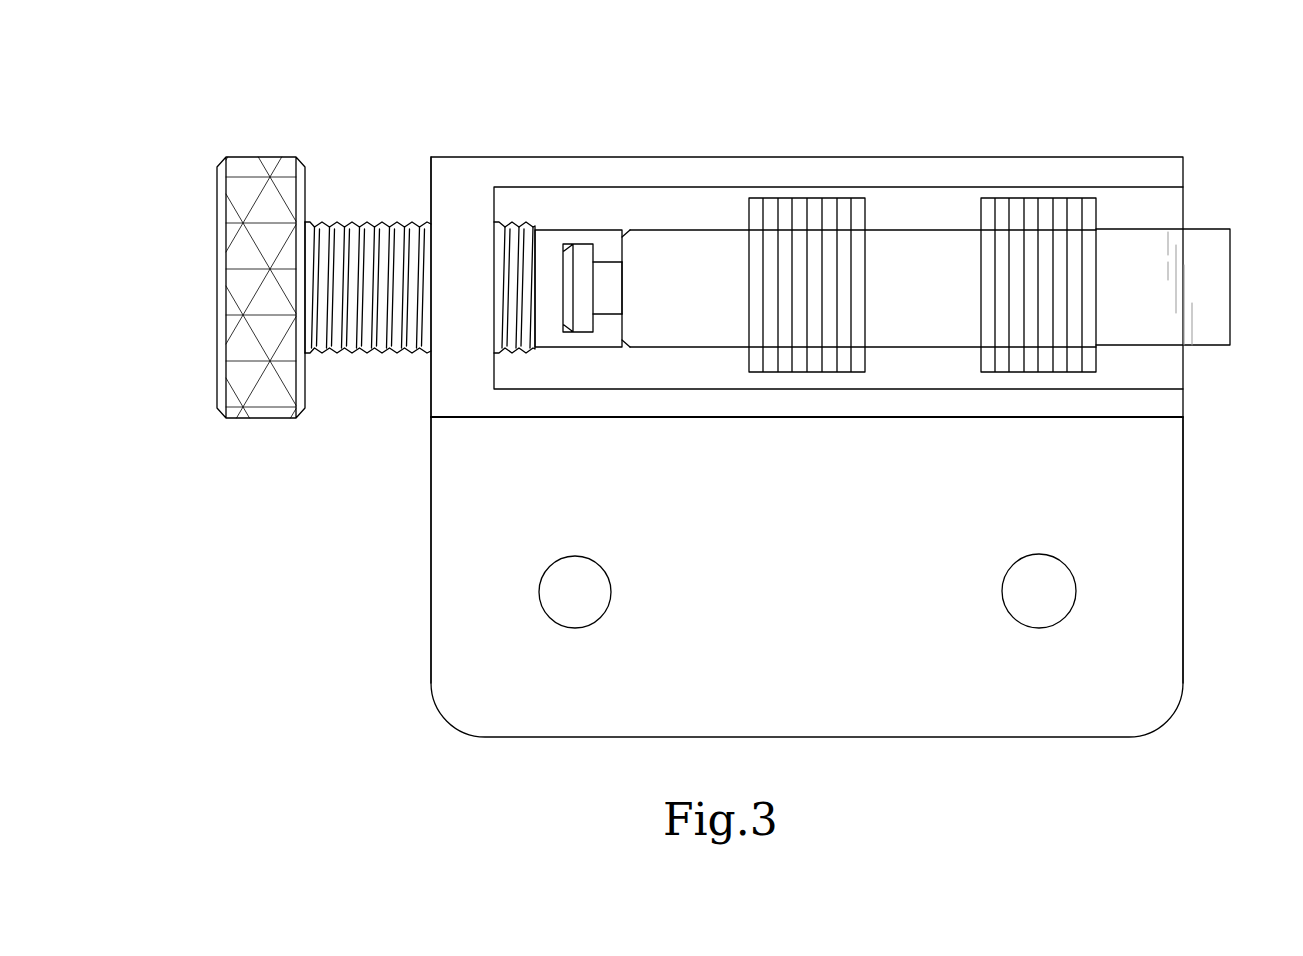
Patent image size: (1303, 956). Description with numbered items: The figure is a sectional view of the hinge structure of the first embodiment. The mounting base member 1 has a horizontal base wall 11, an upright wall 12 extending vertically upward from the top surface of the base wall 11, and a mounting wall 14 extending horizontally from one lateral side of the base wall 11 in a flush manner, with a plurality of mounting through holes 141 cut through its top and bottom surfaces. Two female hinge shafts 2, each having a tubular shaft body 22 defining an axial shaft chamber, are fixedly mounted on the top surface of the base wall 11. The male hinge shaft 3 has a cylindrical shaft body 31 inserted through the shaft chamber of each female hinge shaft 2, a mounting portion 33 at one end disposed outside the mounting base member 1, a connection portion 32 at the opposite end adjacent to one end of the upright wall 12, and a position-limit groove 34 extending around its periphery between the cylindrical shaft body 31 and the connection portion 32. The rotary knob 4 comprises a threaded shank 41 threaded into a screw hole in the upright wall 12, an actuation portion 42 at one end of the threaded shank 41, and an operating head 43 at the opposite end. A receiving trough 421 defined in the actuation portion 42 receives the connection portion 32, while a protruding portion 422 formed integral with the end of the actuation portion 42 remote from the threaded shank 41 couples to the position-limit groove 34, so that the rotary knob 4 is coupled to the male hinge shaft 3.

The mounting base member 1 is at (1184, 574).
The base wall 11 is at (1163, 375).
The upright wall 12 is at (460, 225).
The mounting wall 14 is at (1166, 497).
The mounting through hole 141 is at (611, 590).
The female hinge shaft 2 is at (897, 227).
The tubular shaft body 22 is at (770, 208).
The male hinge shaft 3 is at (873, 276).
The cylindrical shaft body 31 is at (912, 240).
The connection portion 32 is at (583, 322).
The mounting portion 33 is at (1207, 258).
The position-limit groove 34 is at (610, 288).
The rotary knob 4 is at (321, 247).
The threaded shank 41 is at (420, 252).
The actuation portion 42 is at (604, 272).
The receiving trough 421 is at (565, 244).
The protruding portion 422 is at (609, 252).
The operating head 43 is at (216, 240).